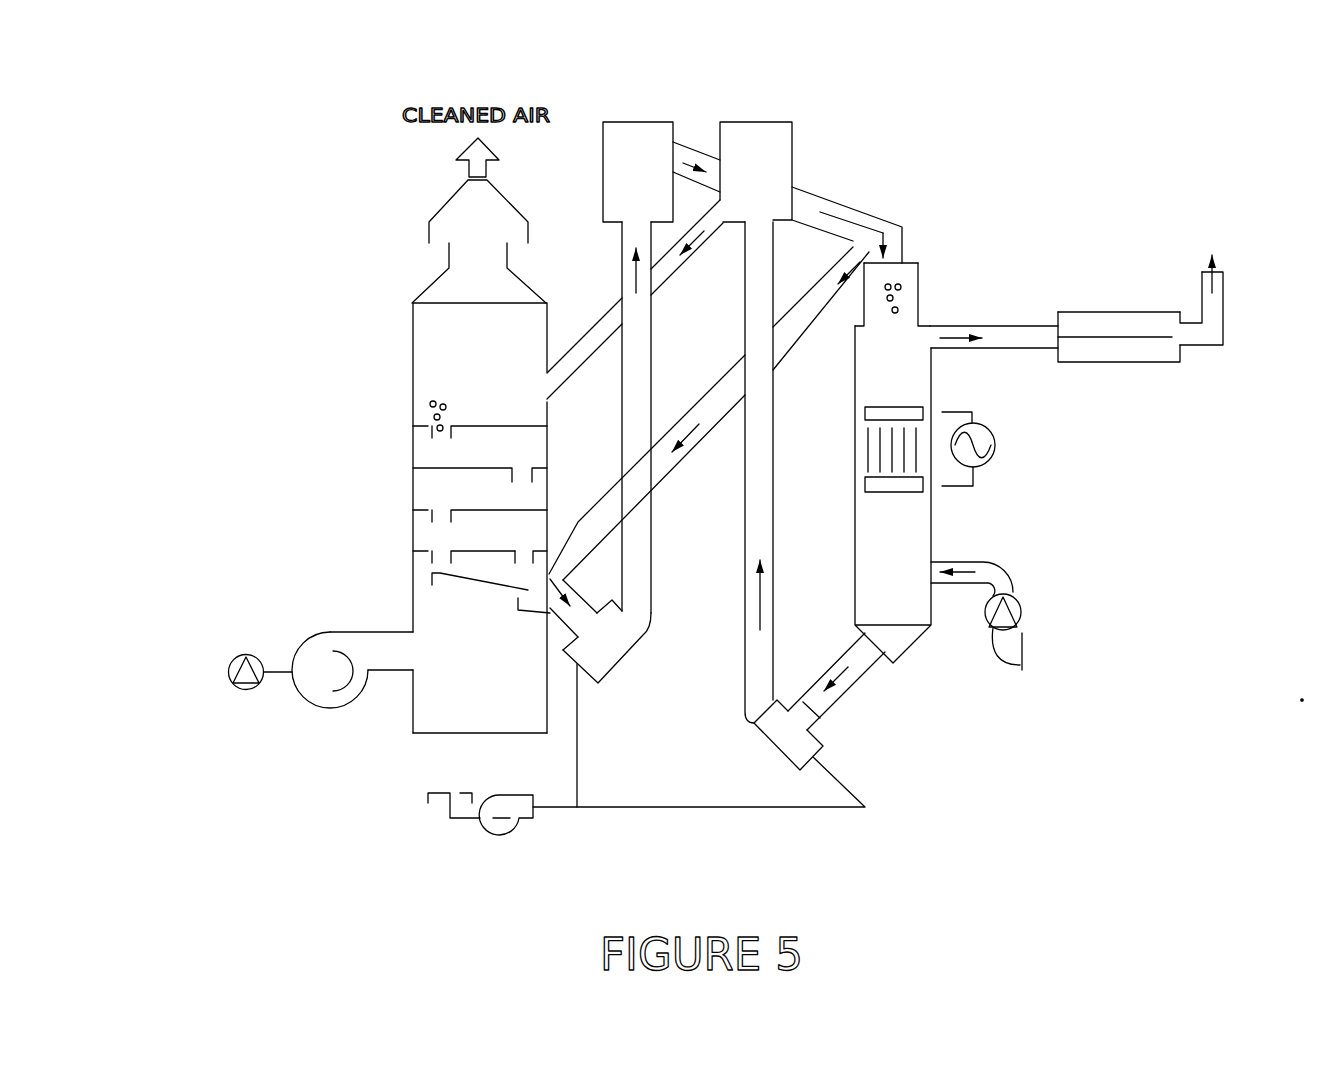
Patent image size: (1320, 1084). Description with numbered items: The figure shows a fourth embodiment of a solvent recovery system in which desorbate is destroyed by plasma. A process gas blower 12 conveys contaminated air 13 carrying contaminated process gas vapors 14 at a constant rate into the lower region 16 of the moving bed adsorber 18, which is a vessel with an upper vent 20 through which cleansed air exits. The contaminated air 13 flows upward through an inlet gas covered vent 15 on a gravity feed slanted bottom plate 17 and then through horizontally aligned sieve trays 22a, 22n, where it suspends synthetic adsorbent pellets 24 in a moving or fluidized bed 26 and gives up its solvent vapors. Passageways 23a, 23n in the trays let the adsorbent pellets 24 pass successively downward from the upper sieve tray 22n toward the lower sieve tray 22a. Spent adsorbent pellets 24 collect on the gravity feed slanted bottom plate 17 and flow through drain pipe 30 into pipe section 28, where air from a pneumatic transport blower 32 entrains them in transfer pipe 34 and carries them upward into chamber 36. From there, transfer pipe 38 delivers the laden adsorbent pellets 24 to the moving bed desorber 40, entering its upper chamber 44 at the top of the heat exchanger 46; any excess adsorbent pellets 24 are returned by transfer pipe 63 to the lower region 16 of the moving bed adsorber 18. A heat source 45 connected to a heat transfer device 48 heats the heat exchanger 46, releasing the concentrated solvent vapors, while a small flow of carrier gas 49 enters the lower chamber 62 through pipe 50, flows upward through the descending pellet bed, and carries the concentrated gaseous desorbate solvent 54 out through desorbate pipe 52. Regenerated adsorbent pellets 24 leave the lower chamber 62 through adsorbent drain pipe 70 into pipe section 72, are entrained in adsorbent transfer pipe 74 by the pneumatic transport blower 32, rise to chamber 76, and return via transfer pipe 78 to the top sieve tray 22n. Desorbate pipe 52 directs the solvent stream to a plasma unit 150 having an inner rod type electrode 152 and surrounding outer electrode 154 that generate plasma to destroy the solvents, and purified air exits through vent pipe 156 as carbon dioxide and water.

The process gas blower 12 is at (292, 695).
The contaminated air 13 is at (377, 652).
The contaminated process gas vapors 14 is at (440, 632).
The inlet gas covered vent 15 is at (503, 587).
The lower region 16 is at (415, 708).
The gravity feed slanted bottom plate 17 is at (430, 590).
The moving bed adsorber 18 is at (403, 520).
The upper vent 20 is at (442, 241).
The sieve tray 22a is at (417, 548).
The sieve tray 22n is at (522, 425).
The passageway 23a is at (524, 556).
The passageway 23n is at (428, 430).
The adsorbent pellets 24 is at (420, 399).
The moving or fluidized bed 26 is at (485, 510).
The pipe section 28 is at (618, 662).
The drain pipe 30 is at (553, 660).
The pneumatic transport blower 32 is at (530, 828).
The transfer pipe 34 is at (652, 550).
The chamber 36 is at (603, 190).
The transfer pipe 38 is at (687, 142).
The moving bed desorber 40 is at (935, 251).
The upper chamber 44 is at (920, 263).
The heat source 45 is at (983, 467).
The heat exchanger 46 is at (930, 320).
The heat transfer device 48 is at (851, 434).
The carrier gas 49 is at (1022, 670).
The pipe 50 is at (982, 575).
The desorbate pipe 52 is at (983, 350).
The concentrated gaseous desorbate solvent 54 is at (1033, 333).
The lower chamber 62 is at (857, 572).
The transfer pipe 63 is at (730, 367).
The adsorbent drain pipe 70 is at (858, 687).
The pipe section 72 is at (772, 740).
The adsorbent transfer pipe 74 is at (777, 497).
The chamber 76 is at (792, 148).
The transfer pipe 78 is at (603, 313).
The plasma unit 150 is at (1170, 364).
The inner rod type electrode 152 is at (1138, 337).
The outer electrode 154 is at (1088, 312).
The vent pipe 156 is at (1223, 302).